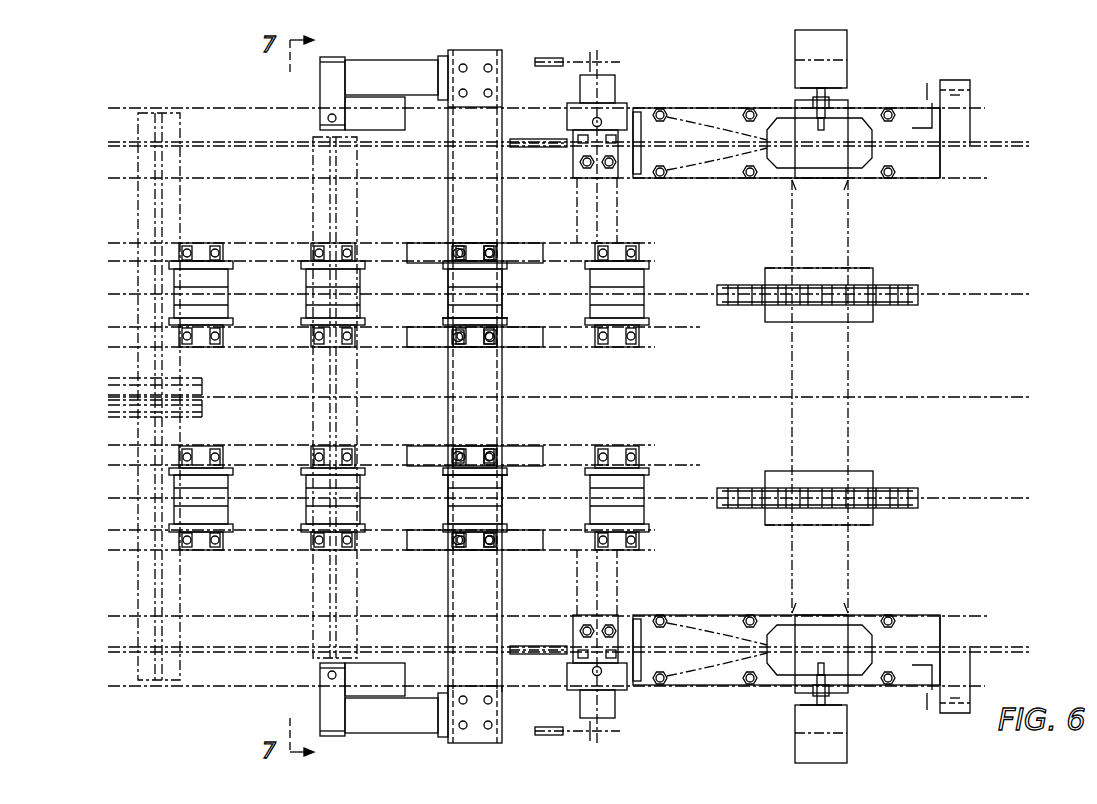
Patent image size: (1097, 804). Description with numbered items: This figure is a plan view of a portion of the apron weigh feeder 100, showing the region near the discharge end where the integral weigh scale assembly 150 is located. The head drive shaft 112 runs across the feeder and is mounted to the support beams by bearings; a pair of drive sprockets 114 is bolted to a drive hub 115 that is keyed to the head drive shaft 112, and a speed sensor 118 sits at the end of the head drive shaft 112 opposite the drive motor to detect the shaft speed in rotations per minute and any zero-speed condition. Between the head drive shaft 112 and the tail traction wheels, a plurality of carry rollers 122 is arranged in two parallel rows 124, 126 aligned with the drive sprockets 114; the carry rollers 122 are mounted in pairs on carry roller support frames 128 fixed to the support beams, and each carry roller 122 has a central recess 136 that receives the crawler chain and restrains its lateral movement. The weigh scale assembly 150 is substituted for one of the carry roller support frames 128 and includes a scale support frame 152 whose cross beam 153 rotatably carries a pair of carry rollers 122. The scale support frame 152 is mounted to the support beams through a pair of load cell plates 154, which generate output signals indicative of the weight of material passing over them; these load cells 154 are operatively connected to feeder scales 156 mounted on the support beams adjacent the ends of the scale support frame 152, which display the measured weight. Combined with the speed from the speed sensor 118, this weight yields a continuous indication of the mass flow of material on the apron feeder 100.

The apron weigh feeder 100 is at (139, 72).
The head drive shaft 112 is at (848, 222).
The drive sprockets 114 is at (895, 306).
The drive hub 115 is at (782, 324).
The speed sensor 118 is at (848, 37).
The carry rollers 122 is at (225, 301).
The first row of carry rollers 124 is at (258, 226).
The second row of carry rollers 126 is at (262, 566).
The carry roller support frames 128 is at (175, 210).
The central recess 136 is at (506, 299).
The weigh scale assembly 150 is at (310, 703).
The scale support frame 152 is at (502, 63).
The cross beam 153 is at (502, 412).
The load cell plates 154 is at (447, 56).
The feeder scales 156 is at (383, 70).